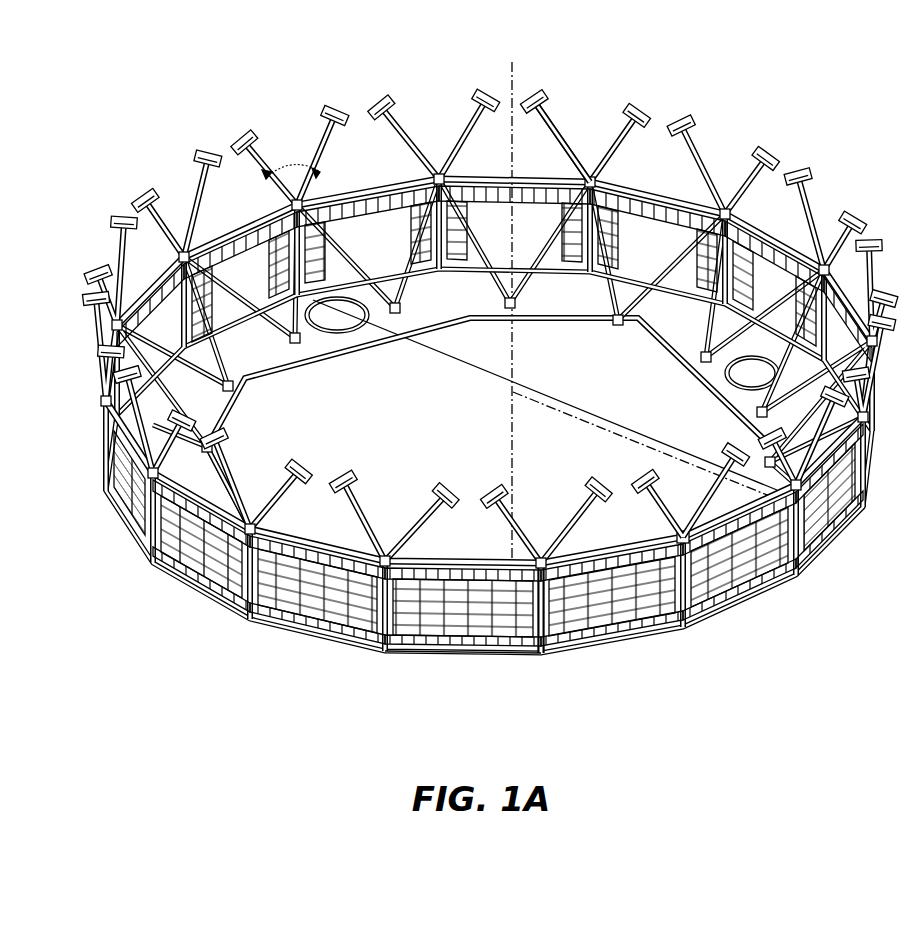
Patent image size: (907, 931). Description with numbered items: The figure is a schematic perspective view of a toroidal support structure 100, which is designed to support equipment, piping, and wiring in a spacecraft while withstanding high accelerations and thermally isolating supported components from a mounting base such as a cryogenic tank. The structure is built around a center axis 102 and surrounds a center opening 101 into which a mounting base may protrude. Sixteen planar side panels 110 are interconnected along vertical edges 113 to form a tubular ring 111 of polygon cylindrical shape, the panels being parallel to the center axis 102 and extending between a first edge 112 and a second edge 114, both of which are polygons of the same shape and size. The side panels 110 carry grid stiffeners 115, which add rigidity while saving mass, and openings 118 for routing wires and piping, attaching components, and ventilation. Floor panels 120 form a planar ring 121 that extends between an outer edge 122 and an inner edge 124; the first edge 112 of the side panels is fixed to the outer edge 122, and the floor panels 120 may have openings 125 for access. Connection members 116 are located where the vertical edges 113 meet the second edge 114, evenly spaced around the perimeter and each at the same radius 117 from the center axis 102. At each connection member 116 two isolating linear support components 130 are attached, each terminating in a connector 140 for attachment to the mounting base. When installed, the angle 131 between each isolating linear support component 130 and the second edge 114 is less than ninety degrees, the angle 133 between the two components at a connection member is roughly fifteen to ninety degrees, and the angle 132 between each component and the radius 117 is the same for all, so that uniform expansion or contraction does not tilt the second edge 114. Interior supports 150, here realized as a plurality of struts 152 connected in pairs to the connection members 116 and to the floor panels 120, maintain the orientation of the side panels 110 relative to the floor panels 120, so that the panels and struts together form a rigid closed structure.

The toroidal support structure 100 is at (722, 122).
The center opening 101 is at (556, 168).
The center axis 102 is at (510, 62).
The side panels 110 is at (316, 640).
The tubular ring 111 is at (380, 650).
The first edge 112 is at (470, 667).
The vertical edges 113 is at (822, 584).
The second edge 114 is at (447, 566).
The grid stiffeners 115 is at (637, 655).
The connection members 116 is at (665, 542).
The radius 117 is at (650, 450).
The openings 118 is at (562, 662).
The floor panels 120 is at (317, 365).
The planar ring 121 is at (220, 410).
The outer edge 122 is at (700, 624).
The inner edge 124 is at (347, 325).
The openings 125 is at (360, 330).
The isolating linear support components 130 is at (308, 160).
The angle 131 is at (340, 110).
The angle 132 is at (212, 230).
The angle 133 is at (290, 165).
The connectors 140 is at (200, 152).
The interior supports 150 is at (525, 303).
The struts 152 is at (540, 292).